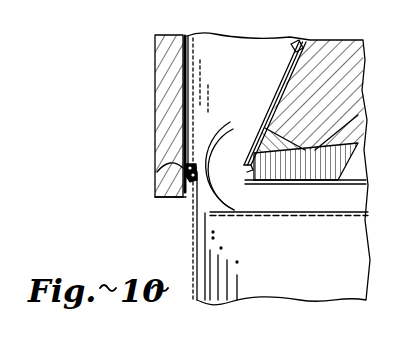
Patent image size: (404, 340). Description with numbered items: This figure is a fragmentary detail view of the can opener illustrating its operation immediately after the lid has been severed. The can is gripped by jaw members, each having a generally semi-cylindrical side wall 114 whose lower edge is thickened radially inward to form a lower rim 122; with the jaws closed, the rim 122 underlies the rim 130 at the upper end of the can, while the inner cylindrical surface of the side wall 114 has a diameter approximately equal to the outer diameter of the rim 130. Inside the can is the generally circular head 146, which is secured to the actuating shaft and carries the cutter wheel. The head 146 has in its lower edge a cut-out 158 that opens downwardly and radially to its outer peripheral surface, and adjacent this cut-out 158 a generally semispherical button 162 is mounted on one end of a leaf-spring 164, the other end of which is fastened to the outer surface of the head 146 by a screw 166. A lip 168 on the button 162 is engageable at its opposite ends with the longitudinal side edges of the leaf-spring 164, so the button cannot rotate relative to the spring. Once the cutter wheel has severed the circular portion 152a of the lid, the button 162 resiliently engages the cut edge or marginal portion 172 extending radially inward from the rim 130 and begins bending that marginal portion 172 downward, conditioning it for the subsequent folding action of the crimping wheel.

The side wall 114 is at (162, 95).
The lower rim 122 is at (184, 192).
The rim 130 is at (157, 171).
The head 146 is at (348, 40).
The circular portion 152a is at (308, 217).
The cut-out 158 is at (316, 168).
The button 162 is at (235, 118).
The leaf-spring 164 is at (272, 97).
The screw 166 is at (291, 47).
The lip 168 is at (241, 186).
The marginal cut portion 172 is at (195, 217).